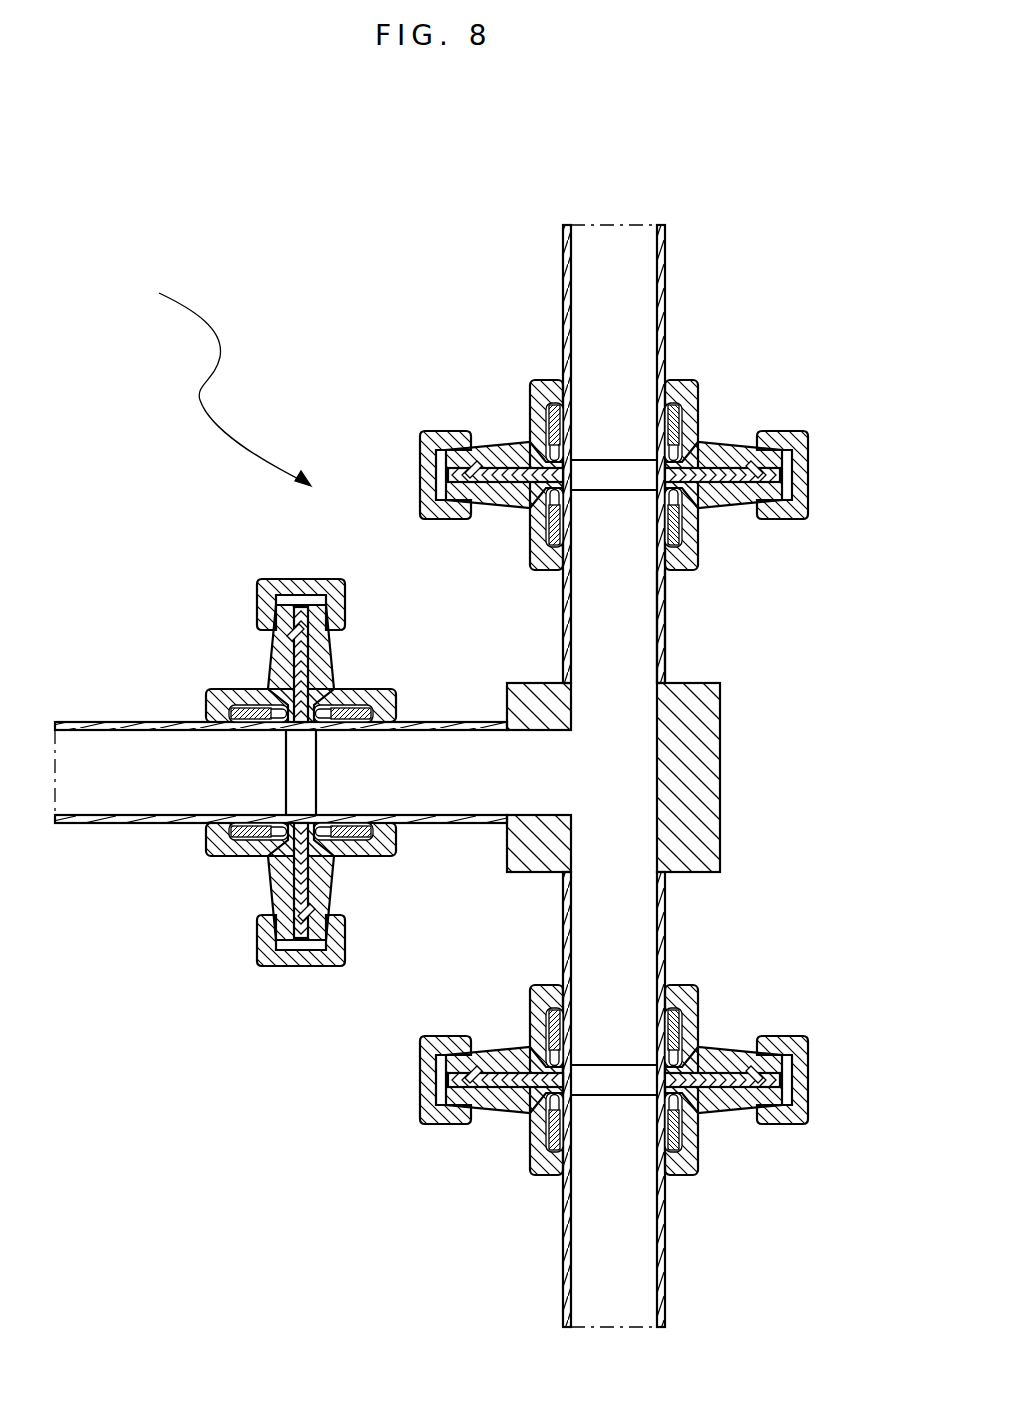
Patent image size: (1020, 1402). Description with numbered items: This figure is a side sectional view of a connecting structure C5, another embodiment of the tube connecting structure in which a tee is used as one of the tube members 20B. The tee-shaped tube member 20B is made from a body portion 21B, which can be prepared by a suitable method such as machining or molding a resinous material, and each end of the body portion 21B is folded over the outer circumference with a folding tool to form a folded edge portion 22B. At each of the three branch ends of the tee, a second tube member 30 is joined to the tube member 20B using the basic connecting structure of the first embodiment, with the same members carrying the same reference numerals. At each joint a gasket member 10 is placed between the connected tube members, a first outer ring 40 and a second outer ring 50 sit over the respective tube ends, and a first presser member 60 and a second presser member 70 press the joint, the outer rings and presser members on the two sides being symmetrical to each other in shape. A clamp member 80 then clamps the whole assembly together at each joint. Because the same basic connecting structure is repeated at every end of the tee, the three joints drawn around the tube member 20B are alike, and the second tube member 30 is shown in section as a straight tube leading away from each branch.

The connecting structure C5 is at (216, 370).
The gasket member 10 is at (808, 495).
The clamp member 80 is at (436, 468).
The second presser member 70 is at (535, 383).
The first presser member 60 is at (700, 545).
The second outer ring 50 is at (688, 392).
The first outer ring 40 is at (540, 545).
The folded edge portion 22B is at (540, 512).
The second tube member 30 is at (563, 305).
The tube member 20B is at (720, 795).
The body portion 21B is at (668, 625).